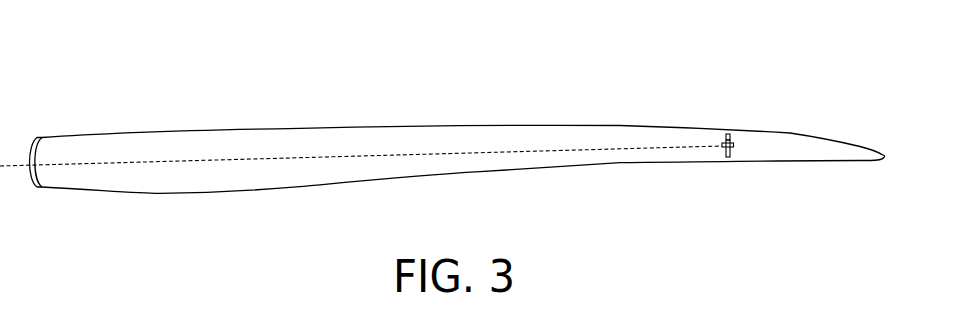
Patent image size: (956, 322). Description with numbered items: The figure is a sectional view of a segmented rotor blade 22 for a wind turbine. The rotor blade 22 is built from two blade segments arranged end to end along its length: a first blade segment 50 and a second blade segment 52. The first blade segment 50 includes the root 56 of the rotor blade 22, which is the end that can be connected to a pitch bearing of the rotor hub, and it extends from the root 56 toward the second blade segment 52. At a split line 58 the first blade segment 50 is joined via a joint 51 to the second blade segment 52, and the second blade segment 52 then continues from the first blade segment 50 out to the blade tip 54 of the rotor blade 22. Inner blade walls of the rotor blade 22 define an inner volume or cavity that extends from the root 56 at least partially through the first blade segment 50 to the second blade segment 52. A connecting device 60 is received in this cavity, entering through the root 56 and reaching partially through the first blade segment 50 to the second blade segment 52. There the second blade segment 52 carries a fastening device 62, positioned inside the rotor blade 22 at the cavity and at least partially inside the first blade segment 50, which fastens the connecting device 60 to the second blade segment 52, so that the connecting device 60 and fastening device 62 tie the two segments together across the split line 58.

The rotor blade 22 is at (454, 139).
The first blade segment 50 is at (413, 127).
The joint 51 is at (730, 158).
The second blade segment 52 is at (790, 132).
The blade tip 54 is at (883, 158).
The root 56 is at (35, 188).
The split line 58 is at (730, 133).
The connecting device 60 is at (595, 150).
The fastening device 62 is at (722, 138).